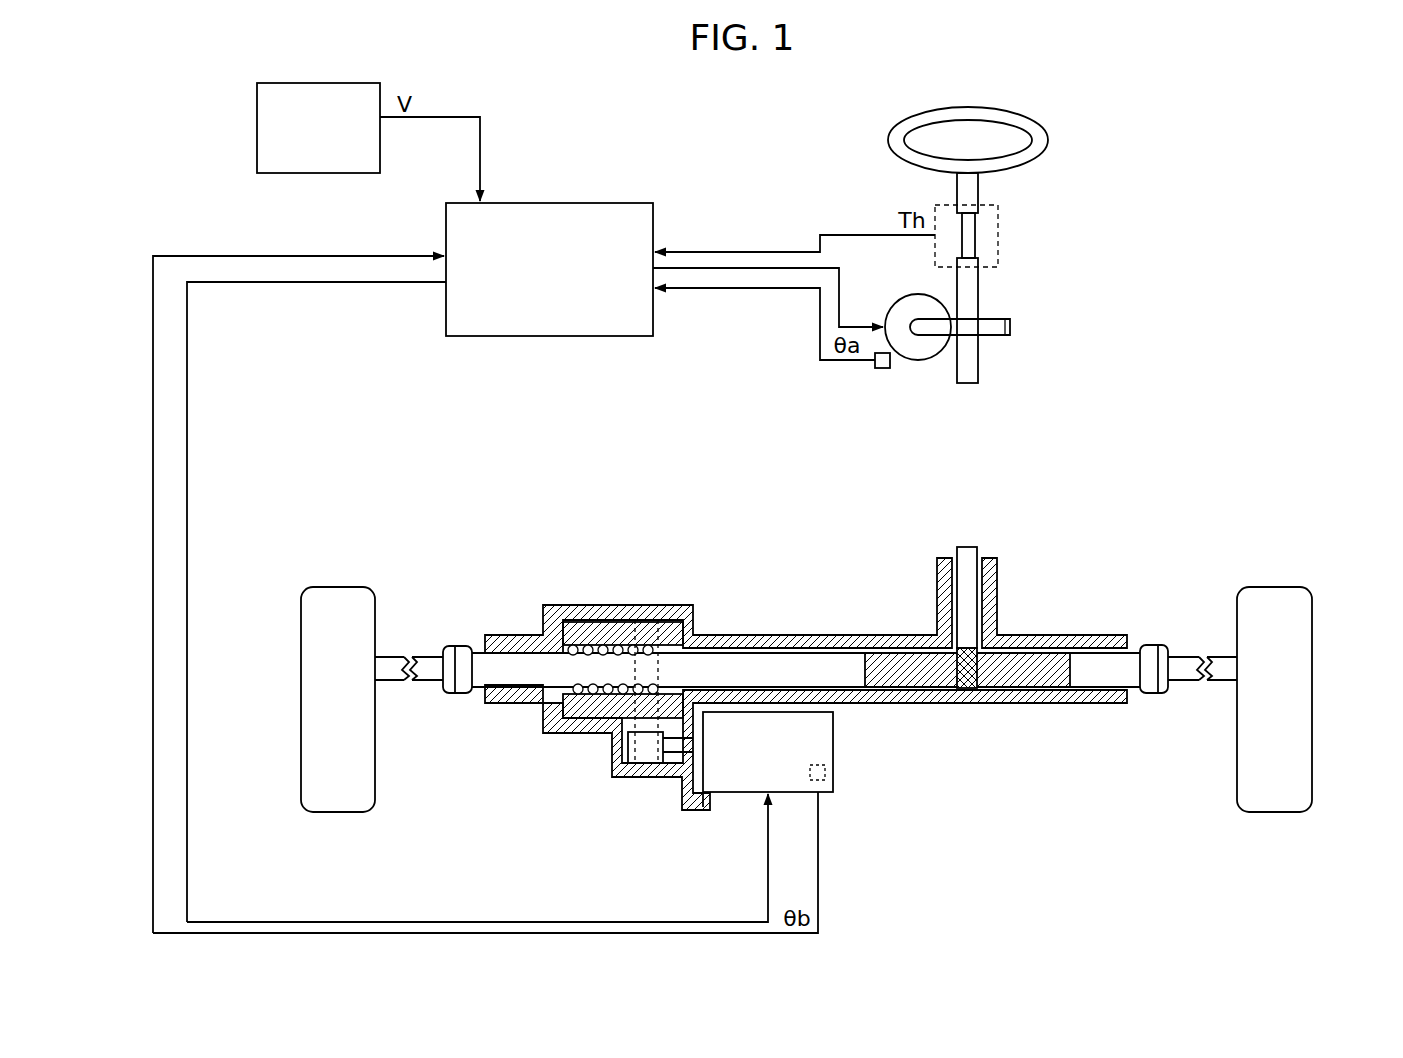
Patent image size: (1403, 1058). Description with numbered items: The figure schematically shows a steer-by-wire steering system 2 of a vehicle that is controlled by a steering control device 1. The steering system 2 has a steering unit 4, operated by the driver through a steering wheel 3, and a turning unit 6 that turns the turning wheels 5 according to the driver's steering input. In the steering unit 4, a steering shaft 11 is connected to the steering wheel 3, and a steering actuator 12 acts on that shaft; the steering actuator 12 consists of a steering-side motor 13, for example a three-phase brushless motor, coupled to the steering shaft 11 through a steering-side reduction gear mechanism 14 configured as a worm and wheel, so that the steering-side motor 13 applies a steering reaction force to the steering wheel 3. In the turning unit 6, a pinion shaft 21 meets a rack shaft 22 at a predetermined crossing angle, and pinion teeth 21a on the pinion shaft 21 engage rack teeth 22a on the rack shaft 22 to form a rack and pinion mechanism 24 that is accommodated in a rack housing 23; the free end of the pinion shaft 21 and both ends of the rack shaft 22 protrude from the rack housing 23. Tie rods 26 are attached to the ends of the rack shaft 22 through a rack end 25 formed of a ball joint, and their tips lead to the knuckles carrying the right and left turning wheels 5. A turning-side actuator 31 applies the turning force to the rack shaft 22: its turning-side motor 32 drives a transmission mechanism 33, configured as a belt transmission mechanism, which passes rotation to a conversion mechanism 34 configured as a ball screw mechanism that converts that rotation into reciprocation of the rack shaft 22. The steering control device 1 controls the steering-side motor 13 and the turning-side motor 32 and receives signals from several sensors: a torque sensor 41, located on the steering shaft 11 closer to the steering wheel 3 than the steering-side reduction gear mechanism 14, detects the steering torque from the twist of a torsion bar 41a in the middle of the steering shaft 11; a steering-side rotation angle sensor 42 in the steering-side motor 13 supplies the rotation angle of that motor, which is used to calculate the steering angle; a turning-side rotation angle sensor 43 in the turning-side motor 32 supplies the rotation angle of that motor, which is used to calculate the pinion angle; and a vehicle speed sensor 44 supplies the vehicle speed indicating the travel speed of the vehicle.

The steering control device 1 is at (622, 202).
The steering system 2 is at (1294, 186).
The steering wheel 3 is at (1010, 113).
The steering unit 4 is at (1144, 348).
The turning wheels 5 is at (332, 585).
The turning unit 6 is at (1187, 571).
The steering shaft 11 is at (980, 295).
The steering actuator 12 is at (1014, 367).
The steering-side motor 13 is at (905, 296).
The steering-side reduction gear mechanism 14 is at (926, 344).
The pinion shaft 21 is at (978, 548).
The pinion teeth 21a is at (968, 688).
The rack shaft 22 is at (780, 650).
The rack teeth 22a is at (928, 682).
The rack housing 23 is at (725, 632).
The rack and pinion mechanism 24 is at (995, 699).
The rack end 25 is at (452, 697).
The tie rods 26 is at (390, 657).
The turning-side actuator 31 is at (581, 802).
The turning-side motor 32 is at (836, 743).
The transmission mechanism 33 is at (634, 769).
The conversion mechanism 34 is at (567, 725).
The torque sensor 41 is at (990, 205).
The torsion bar 41a is at (978, 238).
The steering-side rotation angle sensor 42 is at (880, 370).
The turning-side rotation angle sensor 43 is at (815, 762).
The vehicle speed sensor 44 is at (325, 82).